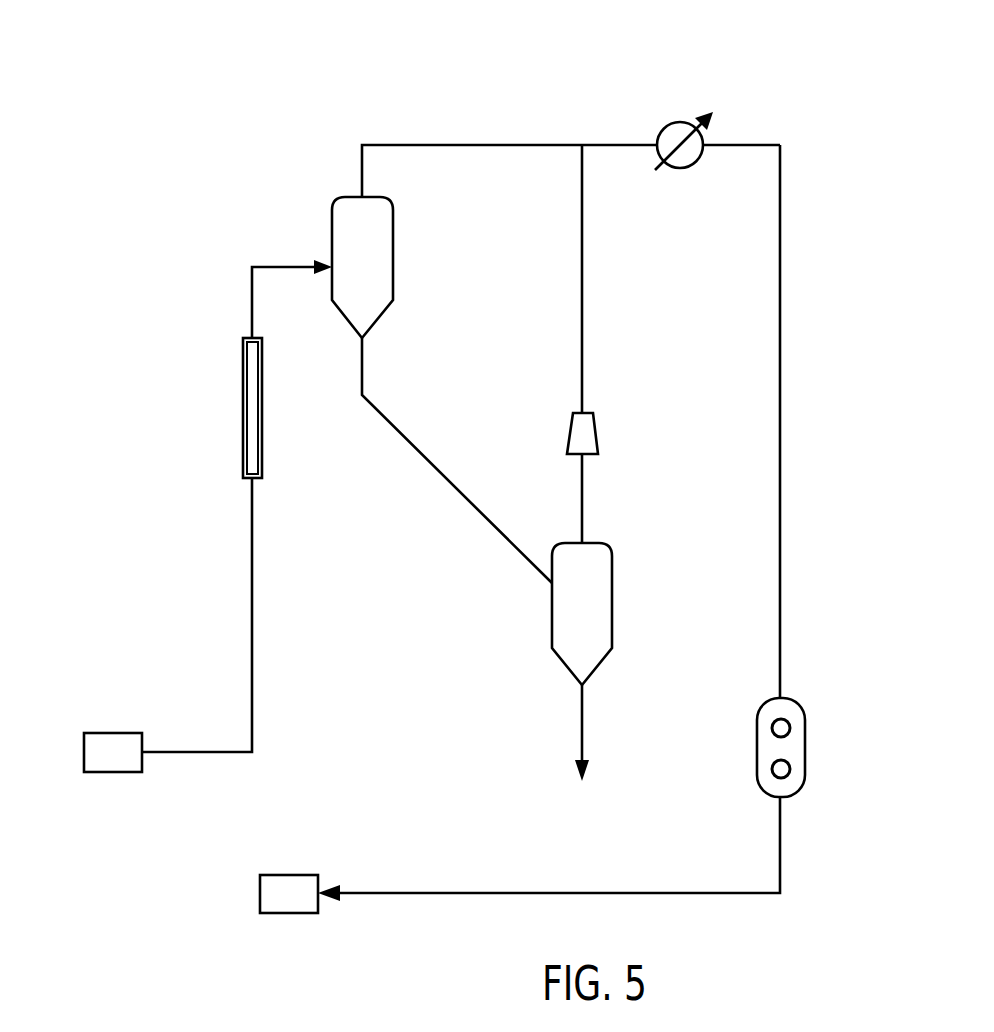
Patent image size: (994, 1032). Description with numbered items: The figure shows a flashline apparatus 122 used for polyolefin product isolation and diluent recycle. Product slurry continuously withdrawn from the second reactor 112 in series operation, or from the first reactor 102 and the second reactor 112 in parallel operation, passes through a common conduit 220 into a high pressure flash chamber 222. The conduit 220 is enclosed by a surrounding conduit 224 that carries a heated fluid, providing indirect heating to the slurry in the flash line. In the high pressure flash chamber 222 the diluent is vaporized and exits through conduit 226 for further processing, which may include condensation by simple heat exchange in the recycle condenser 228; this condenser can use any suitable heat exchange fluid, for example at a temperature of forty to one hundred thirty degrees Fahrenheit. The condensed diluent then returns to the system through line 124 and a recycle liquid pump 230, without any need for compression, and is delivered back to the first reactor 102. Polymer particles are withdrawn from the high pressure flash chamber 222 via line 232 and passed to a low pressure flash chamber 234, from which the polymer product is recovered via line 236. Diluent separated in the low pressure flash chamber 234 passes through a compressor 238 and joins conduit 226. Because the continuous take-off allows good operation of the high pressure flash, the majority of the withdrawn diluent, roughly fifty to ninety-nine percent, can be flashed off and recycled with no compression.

The first reactor 102 is at (291, 874).
The second reactor 112 is at (100, 732).
The flashline apparatus 122 is at (662, 46).
The line 124 is at (464, 892).
The common conduit 220 is at (253, 600).
The high pressure flash chamber 222 is at (393, 256).
The surrounding conduit 224 is at (262, 410).
The conduit 226 is at (438, 145).
The recycle condenser 228 is at (683, 123).
The recycle liquid pump 230 is at (805, 733).
The line 232 is at (375, 410).
The low pressure flash chamber 234 is at (604, 546).
The line 236 is at (584, 725).
The compressor 238 is at (597, 434).